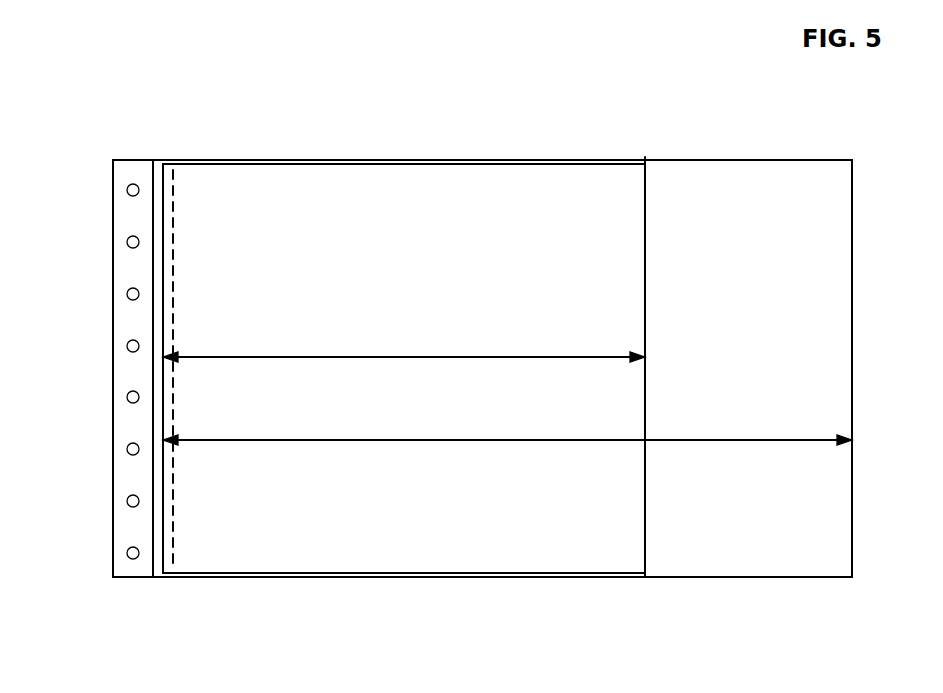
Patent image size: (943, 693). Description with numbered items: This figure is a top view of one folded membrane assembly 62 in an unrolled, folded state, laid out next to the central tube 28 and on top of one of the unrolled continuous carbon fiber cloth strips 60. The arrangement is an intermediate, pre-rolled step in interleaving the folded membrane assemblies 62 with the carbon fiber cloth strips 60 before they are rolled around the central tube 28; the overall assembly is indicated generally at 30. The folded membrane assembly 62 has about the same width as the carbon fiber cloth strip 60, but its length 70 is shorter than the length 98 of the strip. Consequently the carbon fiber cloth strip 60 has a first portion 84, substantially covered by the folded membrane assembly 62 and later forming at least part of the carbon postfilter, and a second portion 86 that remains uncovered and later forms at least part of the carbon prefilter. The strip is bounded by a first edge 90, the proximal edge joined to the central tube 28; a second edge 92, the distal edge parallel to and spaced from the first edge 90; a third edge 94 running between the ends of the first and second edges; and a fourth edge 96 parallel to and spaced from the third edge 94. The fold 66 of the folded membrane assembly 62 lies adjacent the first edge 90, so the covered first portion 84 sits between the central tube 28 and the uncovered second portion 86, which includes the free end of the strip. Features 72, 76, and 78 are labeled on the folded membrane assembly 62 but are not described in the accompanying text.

The central tube 28 is at (112, 397).
The pocket assembly 30 is at (200, 123).
The carbon fiber cloth strip 60 is at (677, 175).
The folded membrane assembly 62 is at (500, 545).
The fold 66 is at (163, 273).
The length of folded membrane assembly 70 is at (192, 357).
The pocket side edge 72 is at (645, 518).
The pocket bottom edge 76 is at (326, 572).
The pocket top edge 78 is at (330, 160).
The first portion 84 is at (537, 160).
The second portion 86 is at (718, 185).
The first edge 90 is at (153, 548).
The second edge 92 is at (850, 513).
The third edge 94 is at (653, 577).
The fourth edge 96 is at (597, 160).
The length of carbon fiber cloth strip 98 is at (192, 440).